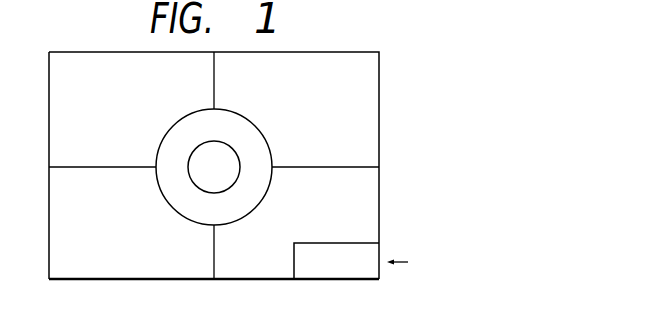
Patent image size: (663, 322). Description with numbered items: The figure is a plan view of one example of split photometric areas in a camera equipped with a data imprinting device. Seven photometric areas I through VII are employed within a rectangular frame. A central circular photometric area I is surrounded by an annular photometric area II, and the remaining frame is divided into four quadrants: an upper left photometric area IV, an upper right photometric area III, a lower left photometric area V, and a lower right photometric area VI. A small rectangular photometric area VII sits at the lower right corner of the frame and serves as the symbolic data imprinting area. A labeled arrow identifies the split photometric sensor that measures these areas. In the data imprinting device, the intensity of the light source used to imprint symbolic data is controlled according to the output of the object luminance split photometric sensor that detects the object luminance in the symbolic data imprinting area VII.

The photometric area I is at (217, 176).
The photometric area II is at (254, 153).
The photometric area III is at (318, 104).
The photometric area IV is at (121, 85).
The photometric area V is at (120, 209).
The photometric area VI is at (324, 225).
The symbolic data imprinting area VII is at (340, 270).